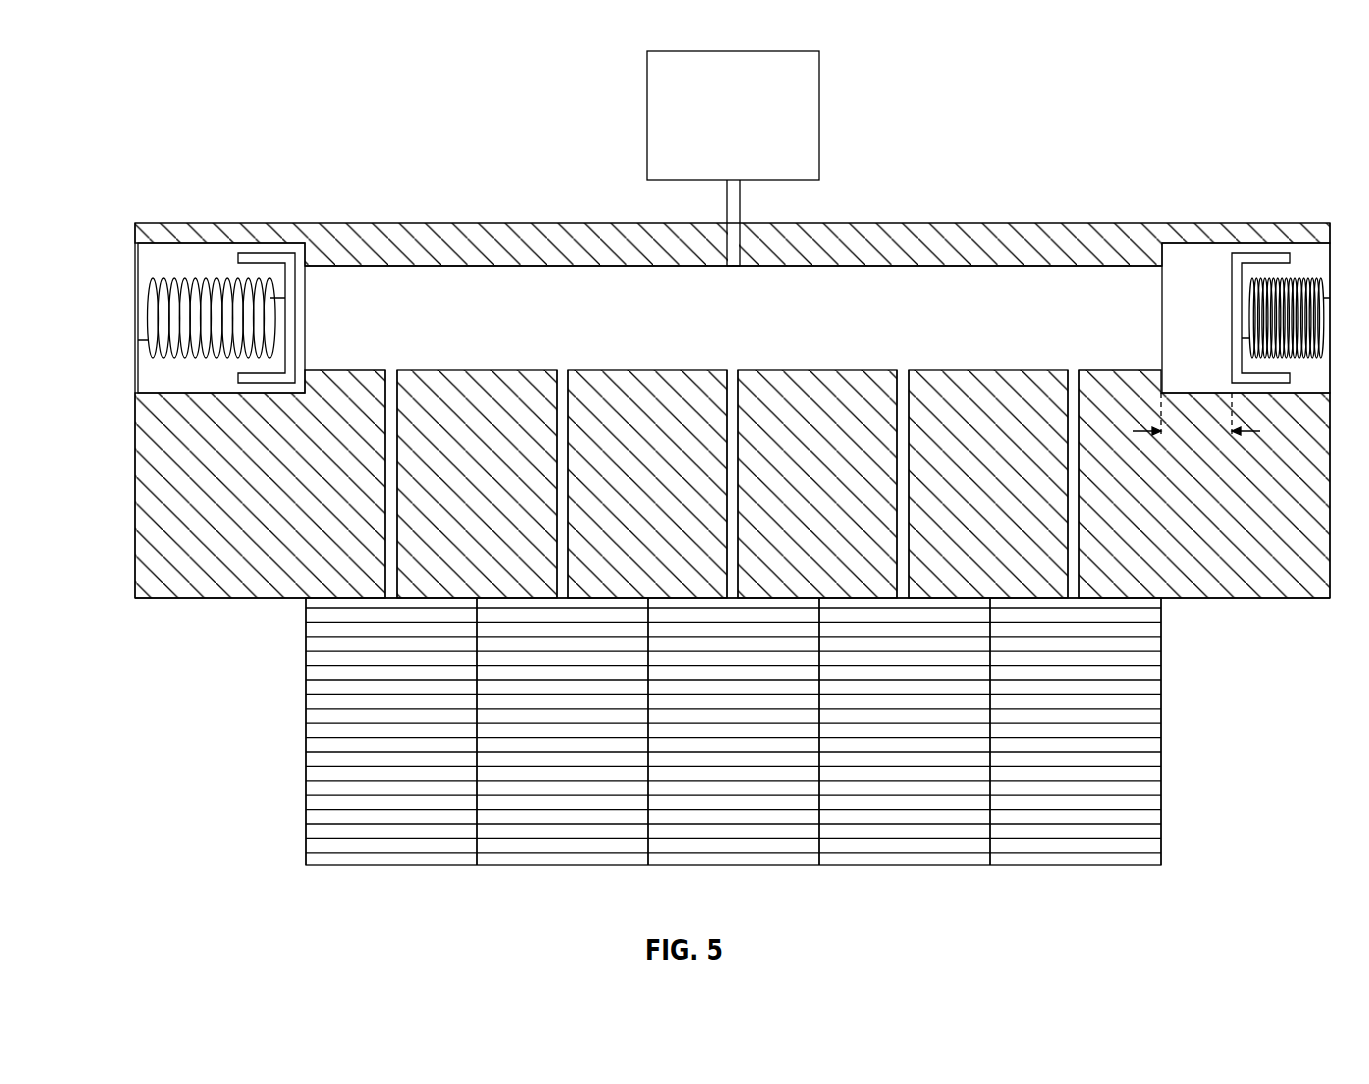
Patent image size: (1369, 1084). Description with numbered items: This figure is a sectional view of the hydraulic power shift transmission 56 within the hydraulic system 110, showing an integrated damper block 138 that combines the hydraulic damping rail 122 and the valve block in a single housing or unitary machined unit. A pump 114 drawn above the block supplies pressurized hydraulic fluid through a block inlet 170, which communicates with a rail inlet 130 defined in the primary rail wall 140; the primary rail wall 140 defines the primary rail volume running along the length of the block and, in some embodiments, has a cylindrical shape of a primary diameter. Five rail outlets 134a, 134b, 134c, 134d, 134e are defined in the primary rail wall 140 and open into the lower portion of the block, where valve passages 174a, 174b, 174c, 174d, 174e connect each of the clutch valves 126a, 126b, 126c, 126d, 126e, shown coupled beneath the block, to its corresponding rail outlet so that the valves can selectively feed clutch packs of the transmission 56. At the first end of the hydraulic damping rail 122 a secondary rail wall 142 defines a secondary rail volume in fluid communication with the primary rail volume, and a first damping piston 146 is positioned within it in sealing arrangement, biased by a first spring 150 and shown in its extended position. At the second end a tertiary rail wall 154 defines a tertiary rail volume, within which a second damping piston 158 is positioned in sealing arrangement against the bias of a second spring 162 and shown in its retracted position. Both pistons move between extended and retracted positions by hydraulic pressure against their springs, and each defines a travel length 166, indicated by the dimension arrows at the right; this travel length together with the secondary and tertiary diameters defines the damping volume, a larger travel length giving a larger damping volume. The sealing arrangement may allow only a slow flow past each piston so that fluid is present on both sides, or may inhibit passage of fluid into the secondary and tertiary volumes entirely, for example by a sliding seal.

The hydraulic system 110 is at (243, 77).
The pump 114 is at (647, 112).
The hydraulic damping rail 122 is at (424, 286).
The rail inlet 130 is at (741, 266).
The block inlet 170 is at (726, 222).
The primary rail wall 140 is at (543, 267).
The secondary rail wall 142 is at (217, 242).
The first damping piston 146 is at (262, 253).
The first spring 150 is at (190, 278).
The tertiary rail wall 154 is at (1213, 242).
The second damping piston 158 is at (1247, 254).
The second spring 162 is at (1298, 277).
The integrated damper block 138 is at (135, 432).
The rail outlet 134a is at (383, 375).
The rail outlet 134b is at (555, 373).
The rail outlet 134c is at (727, 373).
The rail outlet 134d is at (897, 373).
The rail outlet 134e is at (1068, 373).
The valve passage 174a is at (383, 495).
The valve passage 174b is at (555, 495).
The valve passage 174c is at (727, 500).
The valve passage 174d is at (897, 495).
The valve passage 174e is at (1068, 495).
The travel length 166 is at (1155, 434).
The transmission 56 is at (1207, 710).
The hydraulic clutch valve 126a is at (383, 860).
The hydraulic clutch valve 126b is at (556, 860).
The hydraulic clutch valve 126c is at (730, 860).
The hydraulic clutch valve 126d is at (900, 860).
The hydraulic clutch valve 126e is at (1073, 860).